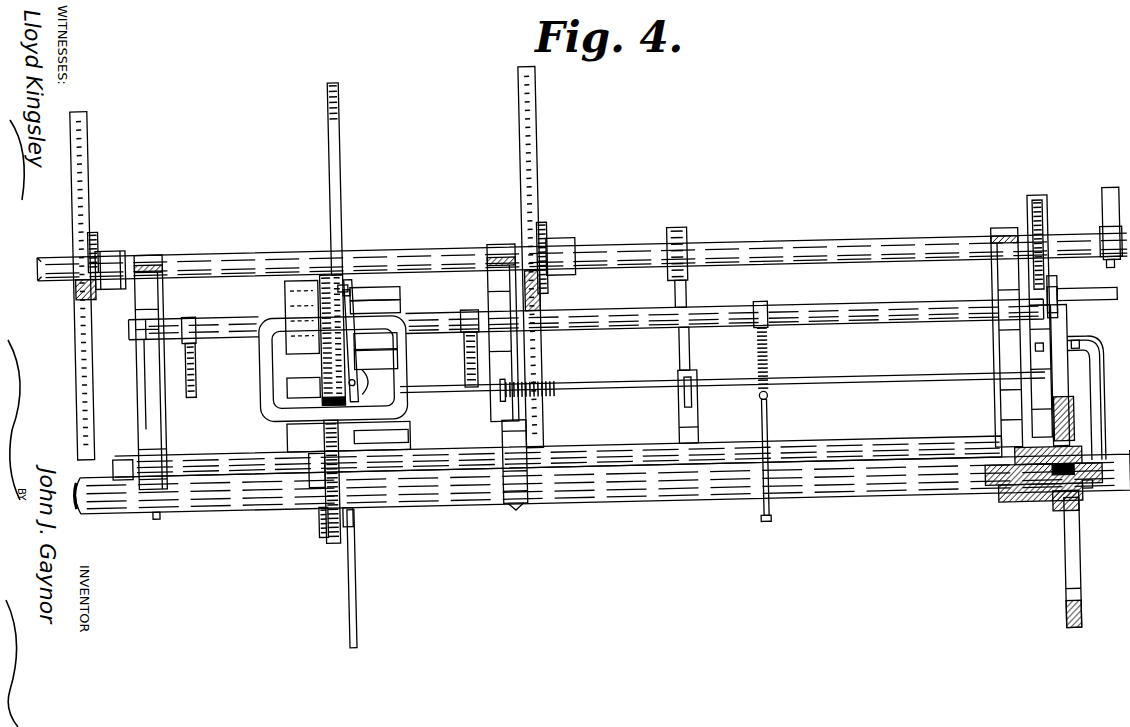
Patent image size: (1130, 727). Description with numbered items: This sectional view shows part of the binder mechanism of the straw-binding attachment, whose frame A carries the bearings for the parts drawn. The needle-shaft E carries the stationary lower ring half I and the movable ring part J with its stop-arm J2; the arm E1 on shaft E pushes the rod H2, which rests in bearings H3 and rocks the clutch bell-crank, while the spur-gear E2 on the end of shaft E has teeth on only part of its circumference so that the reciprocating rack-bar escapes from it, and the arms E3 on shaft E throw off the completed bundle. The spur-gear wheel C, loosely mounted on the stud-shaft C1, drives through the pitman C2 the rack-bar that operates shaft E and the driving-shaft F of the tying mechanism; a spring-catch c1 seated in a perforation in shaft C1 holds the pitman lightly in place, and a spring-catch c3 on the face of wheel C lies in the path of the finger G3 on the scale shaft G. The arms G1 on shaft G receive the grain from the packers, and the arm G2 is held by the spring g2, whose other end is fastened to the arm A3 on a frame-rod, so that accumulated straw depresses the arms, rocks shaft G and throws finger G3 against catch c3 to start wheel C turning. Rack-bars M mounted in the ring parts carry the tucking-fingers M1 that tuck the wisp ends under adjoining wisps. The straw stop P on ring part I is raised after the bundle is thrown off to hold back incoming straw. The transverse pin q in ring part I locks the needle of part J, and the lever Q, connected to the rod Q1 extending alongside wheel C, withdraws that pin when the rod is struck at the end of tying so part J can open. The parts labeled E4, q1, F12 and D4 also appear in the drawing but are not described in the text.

The frame A is at (155, 255).
The needle-shaft E is at (237, 258).
The arm E1 is at (676, 291).
The spur-gear E2 is at (1040, 206).
The arms E3 is at (86, 158).
The stop E4 is at (1108, 210).
The straw stop P is at (334, 145).
The lever Q is at (351, 330).
The transverse pin q is at (345, 288).
The rod Q1 is at (905, 382).
The spring q1 is at (547, 383).
The rack-bars M is at (402, 303).
The tucking-fingers M1 is at (402, 290).
The shaft G is at (858, 331).
The arms G1 is at (466, 358).
The arm G2 is at (196, 372).
The finger G3 is at (1059, 318).
The lower ring part I is at (290, 361).
The driving-shaft F is at (121, 452).
The pinion F12 is at (326, 536).
The movable ring part J is at (318, 518).
The stop-arm J2 is at (352, 590).
The rod H2 is at (680, 357).
The bearings H3 is at (680, 398).
The spring g2 is at (760, 370).
The arm A3 is at (762, 520).
The spur-gear wheel C is at (1061, 571).
The stud-shaft C1 is at (862, 485).
The spring-catch c1 is at (1085, 500).
The pitman C2 is at (1104, 413).
The spring-catch c3 is at (1036, 358).
The shaft D4 is at (1092, 300).